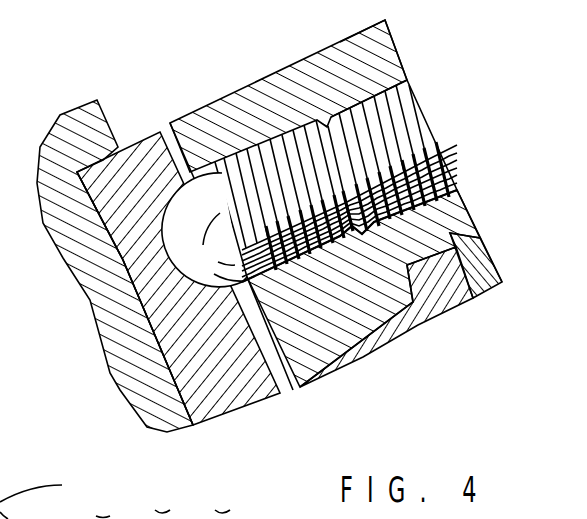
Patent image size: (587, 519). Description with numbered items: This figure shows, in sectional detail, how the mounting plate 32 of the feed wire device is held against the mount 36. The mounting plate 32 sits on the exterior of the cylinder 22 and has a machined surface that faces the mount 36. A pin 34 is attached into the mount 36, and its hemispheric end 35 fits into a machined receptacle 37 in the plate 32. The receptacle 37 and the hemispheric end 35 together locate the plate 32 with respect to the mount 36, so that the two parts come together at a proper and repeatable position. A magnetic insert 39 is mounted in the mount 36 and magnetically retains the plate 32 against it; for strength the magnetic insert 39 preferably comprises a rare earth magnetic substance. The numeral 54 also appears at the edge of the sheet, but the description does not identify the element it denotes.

The cylinder 22 is at (108, 238).
The mounting plate 32 is at (178, 240).
The pin 34 is at (336, 199).
The hemispheric end 35 is at (203, 166).
The mount 36 is at (405, 68).
The receptacle 37 is at (111, 298).
The magnetic insert 39 is at (401, 316).
The element of adjacent figure 54 is at (115, 496).